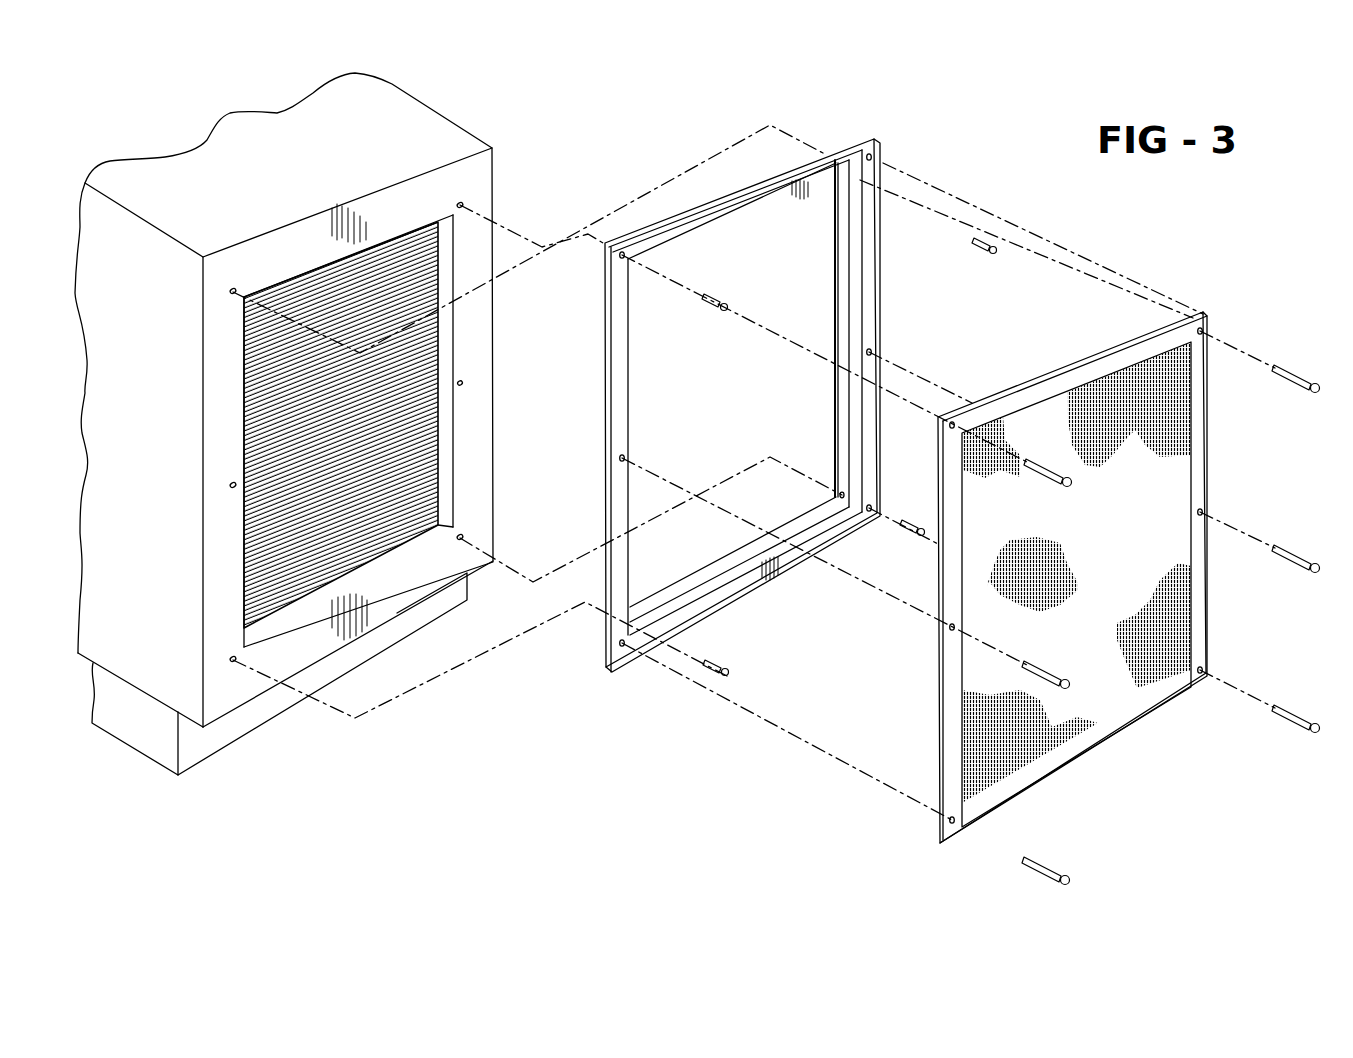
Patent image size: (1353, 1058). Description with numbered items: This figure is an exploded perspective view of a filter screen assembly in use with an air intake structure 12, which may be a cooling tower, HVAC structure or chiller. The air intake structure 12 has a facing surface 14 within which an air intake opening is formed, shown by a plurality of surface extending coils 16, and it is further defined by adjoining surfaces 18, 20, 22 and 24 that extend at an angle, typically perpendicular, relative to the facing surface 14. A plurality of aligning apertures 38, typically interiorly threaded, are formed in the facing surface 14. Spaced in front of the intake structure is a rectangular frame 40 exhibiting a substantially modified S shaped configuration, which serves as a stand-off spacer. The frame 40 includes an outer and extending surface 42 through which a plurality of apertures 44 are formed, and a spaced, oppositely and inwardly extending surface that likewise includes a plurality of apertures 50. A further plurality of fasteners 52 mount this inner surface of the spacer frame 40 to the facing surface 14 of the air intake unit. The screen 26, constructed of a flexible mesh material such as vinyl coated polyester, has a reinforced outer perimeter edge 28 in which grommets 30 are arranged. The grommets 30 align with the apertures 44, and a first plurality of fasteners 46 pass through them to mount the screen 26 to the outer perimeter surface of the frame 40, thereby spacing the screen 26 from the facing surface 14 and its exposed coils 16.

The air intake structure 12 is at (310, 422).
The facing surface 14 is at (310, 398).
The surface extending coils 16 is at (425, 333).
The adjoining surface 18 is at (423, 127).
The adjoining surface 20 is at (493, 488).
The adjoining surface 22 is at (397, 614).
The adjoining surface 24 is at (100, 370).
The screen 26 is at (1105, 378).
The reinforced outer perimeter edge 28 is at (1064, 570).
The grommets 30 is at (950, 427).
The aligning apertures 38 is at (233, 488).
The rectangular frame 40 is at (718, 408).
The outer extending surface 42 is at (622, 377).
The apertures 44 is at (620, 257).
The first plurality of fasteners 46 is at (1047, 665).
The apertures 50 is at (837, 494).
The further plurality of fasteners 52 is at (713, 294).